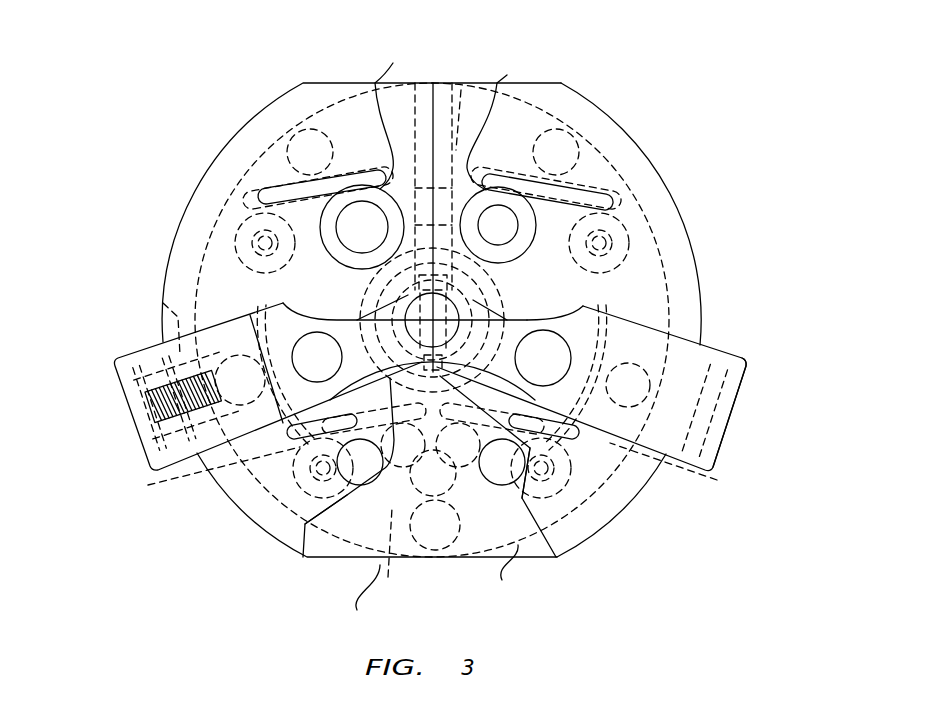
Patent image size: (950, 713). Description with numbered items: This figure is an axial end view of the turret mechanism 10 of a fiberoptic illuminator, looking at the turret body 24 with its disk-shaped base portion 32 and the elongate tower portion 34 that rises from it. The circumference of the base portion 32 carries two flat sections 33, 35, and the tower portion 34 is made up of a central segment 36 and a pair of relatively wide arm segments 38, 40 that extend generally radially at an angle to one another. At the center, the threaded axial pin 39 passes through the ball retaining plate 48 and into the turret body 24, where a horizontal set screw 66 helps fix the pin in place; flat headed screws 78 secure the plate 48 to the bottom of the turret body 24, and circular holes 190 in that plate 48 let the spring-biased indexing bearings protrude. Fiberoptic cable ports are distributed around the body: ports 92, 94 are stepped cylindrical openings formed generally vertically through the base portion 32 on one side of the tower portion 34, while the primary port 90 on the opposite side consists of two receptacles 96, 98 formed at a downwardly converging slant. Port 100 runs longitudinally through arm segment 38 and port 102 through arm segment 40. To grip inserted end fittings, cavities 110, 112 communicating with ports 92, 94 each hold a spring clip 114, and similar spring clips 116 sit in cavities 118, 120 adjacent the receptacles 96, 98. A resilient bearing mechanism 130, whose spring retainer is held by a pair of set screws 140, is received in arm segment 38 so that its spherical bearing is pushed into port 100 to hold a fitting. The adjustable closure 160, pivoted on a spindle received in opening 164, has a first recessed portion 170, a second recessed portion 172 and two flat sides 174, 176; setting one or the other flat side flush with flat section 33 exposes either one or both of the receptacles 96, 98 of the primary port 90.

The turret mechanism 10 is at (748, 270).
The turret body 24 is at (173, 240).
The base portion 32 is at (690, 240).
The flat section 33 is at (323, 562).
The tower portion 34 is at (740, 385).
The flat section 35 is at (438, 84).
The central segment 36 is at (473, 302).
The arm segment 38 is at (125, 354).
The threaded axial pin 39 is at (395, 297).
The arm segment 40 is at (748, 355).
The ball retaining plate 48 is at (647, 155).
The horizontal set screw 66 is at (469, 119).
The flat headed screws 78 is at (240, 238).
The primary port 90 is at (537, 505).
The port 92 is at (362, 153).
The port 94 is at (498, 156).
The receptacle 96 is at (303, 521).
The receptacle 98 is at (522, 503).
The port 100 is at (298, 338).
The port 102 is at (583, 306).
The cavity 110 is at (260, 187).
The cavity 112 is at (620, 182).
The spring clip 114 is at (268, 187).
The spring clips 116 is at (294, 436).
The cavity 118 is at (213, 403).
The cavity 120 is at (647, 401).
The resilient bearing mechanism 130 is at (145, 364).
The set screws 140 is at (163, 303).
The adjustable closure 160 is at (508, 577).
The opening 164 is at (388, 554).
The first recessed portion 170 is at (333, 508).
The second recessed portion 172 is at (503, 487).
The flat side 174 is at (517, 357).
The flat side 176 is at (363, 601).
The circular holes 190 is at (320, 128).